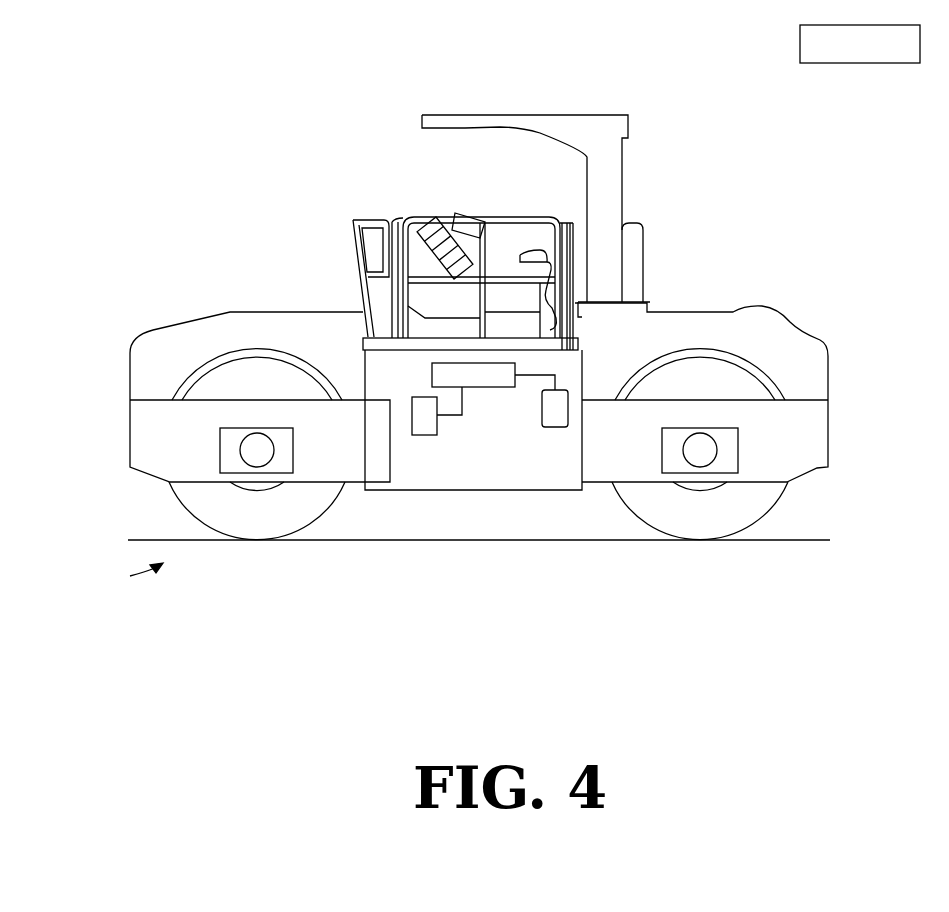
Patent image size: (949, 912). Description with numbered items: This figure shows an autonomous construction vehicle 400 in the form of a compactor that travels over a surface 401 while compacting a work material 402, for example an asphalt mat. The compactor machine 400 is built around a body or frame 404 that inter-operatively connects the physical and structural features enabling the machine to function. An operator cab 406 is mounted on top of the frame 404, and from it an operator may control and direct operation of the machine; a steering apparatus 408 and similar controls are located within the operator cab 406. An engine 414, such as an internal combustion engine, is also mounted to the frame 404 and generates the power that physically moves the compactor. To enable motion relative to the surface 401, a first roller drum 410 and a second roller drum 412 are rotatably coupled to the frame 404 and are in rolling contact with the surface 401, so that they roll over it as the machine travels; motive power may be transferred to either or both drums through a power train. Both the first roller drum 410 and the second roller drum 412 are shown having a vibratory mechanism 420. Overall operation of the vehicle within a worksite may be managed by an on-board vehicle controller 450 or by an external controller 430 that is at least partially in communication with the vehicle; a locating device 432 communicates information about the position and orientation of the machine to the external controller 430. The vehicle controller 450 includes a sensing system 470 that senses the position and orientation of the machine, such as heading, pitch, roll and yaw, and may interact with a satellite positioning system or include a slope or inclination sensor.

The autonomous construction vehicle 400 is at (236, 146).
The surface 401 is at (788, 540).
The work material 402 is at (125, 575).
The frame 404 is at (517, 477).
The operator cab 406 is at (540, 256).
The steering apparatus 408 is at (400, 252).
The first roller drum 410 is at (200, 510).
The second roller drum 412 is at (645, 510).
The engine 414 is at (300, 315).
The vibratory mechanism 420 is at (295, 448).
The external controller 430 is at (800, 50).
The locating device 432 is at (542, 405).
The vehicle controller 450 is at (432, 367).
The sensing system 470 is at (428, 435).